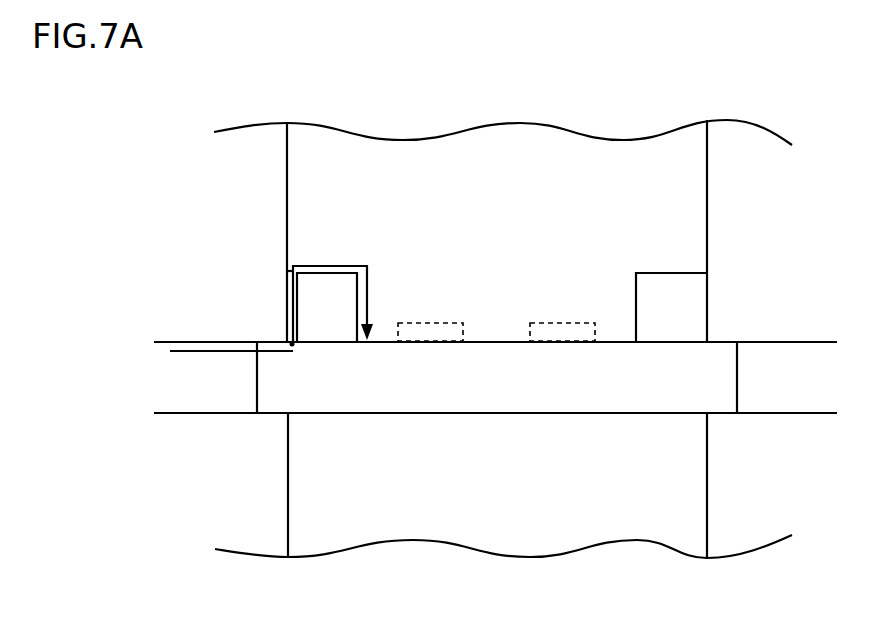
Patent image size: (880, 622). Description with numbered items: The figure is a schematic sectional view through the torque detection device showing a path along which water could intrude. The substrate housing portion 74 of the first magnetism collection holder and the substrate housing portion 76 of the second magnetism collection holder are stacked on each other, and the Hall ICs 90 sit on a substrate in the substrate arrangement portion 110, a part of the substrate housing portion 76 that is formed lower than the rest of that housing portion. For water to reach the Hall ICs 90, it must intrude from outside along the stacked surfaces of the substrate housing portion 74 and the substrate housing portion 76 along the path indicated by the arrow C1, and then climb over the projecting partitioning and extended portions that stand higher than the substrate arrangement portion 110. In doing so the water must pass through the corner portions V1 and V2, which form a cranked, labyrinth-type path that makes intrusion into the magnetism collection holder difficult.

The substrate housing portion 74 is at (633, 160).
The substrate housing portion 76 is at (633, 525).
The Hall ICs 90 is at (564, 323).
The substrate arrangement portion 110 is at (613, 342).
The corner portion V1 is at (294, 348).
The corner portion V2 is at (283, 273).
The arrow indicating water intrusion path C1 is at (229, 353).